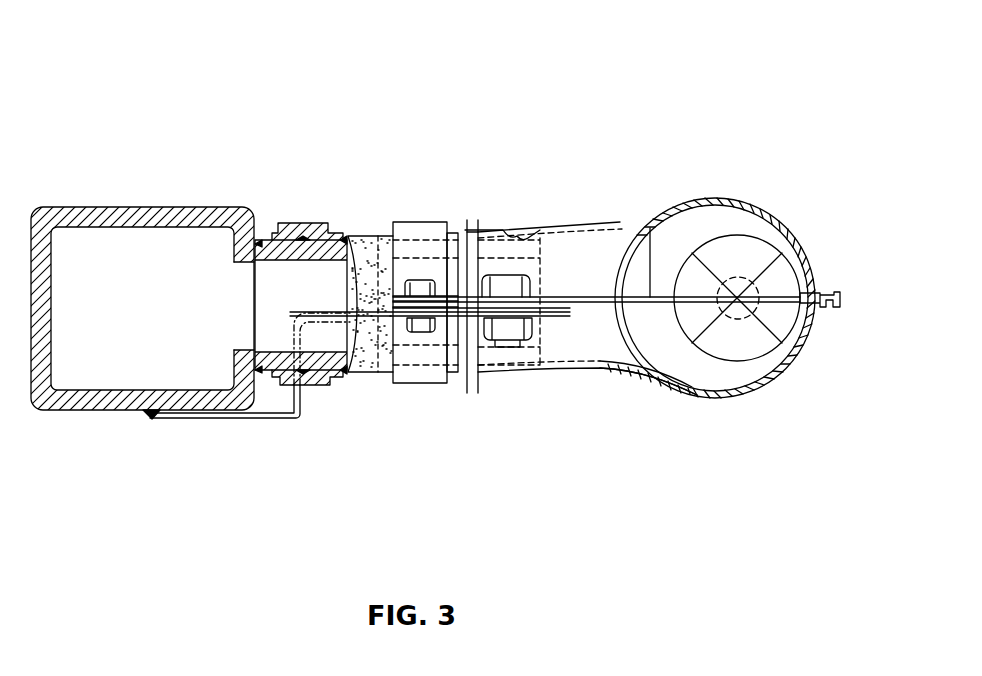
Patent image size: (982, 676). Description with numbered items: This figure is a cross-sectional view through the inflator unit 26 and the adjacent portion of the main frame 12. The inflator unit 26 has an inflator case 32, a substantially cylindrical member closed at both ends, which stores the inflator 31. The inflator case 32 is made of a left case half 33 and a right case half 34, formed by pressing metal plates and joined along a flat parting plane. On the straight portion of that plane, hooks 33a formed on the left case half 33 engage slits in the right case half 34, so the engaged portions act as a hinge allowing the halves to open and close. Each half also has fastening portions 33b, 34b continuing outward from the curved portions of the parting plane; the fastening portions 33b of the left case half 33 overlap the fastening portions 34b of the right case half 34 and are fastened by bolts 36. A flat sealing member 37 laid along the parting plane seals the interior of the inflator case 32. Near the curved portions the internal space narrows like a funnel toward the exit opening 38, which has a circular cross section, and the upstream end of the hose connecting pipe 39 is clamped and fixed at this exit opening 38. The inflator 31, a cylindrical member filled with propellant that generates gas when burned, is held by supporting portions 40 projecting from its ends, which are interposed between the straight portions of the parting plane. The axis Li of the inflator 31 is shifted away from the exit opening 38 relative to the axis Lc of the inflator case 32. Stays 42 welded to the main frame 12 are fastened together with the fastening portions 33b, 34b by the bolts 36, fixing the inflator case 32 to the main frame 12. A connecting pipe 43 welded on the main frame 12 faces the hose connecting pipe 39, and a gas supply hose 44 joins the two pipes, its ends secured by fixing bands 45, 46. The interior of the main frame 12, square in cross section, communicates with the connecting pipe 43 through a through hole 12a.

The main frame 12 is at (168, 203).
The through hole 12a is at (241, 292).
The inflator unit 26 is at (522, 170).
The inflator 31 is at (745, 236).
The inflator case 32 is at (712, 194).
The left case half 33 is at (617, 386).
The hook 33a is at (829, 290).
The fastening portion 33b is at (477, 362).
The right case half 34 is at (595, 218).
The fastening portion 34b is at (478, 231).
The bolt 36 is at (517, 275).
The sealing member 37 is at (650, 228).
The exit opening 38 is at (520, 240).
The hose connecting pipe 39 is at (383, 232).
The supporting portion 40 is at (750, 278).
The stay 42 is at (297, 420).
The connecting pipe 43 is at (258, 236).
The gas supply hose 44 is at (378, 372).
The fixing band 45 is at (312, 224).
The fixing band 46 is at (420, 221).
The axis of the inflator case Lc is at (715, 300).
The axis of the inflator Li is at (737, 300).